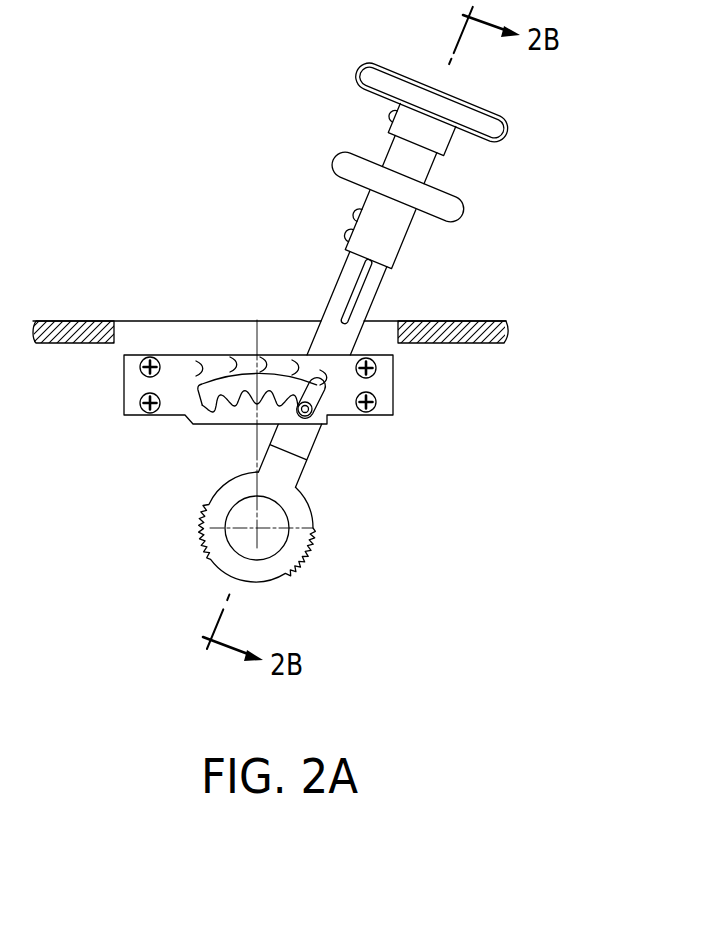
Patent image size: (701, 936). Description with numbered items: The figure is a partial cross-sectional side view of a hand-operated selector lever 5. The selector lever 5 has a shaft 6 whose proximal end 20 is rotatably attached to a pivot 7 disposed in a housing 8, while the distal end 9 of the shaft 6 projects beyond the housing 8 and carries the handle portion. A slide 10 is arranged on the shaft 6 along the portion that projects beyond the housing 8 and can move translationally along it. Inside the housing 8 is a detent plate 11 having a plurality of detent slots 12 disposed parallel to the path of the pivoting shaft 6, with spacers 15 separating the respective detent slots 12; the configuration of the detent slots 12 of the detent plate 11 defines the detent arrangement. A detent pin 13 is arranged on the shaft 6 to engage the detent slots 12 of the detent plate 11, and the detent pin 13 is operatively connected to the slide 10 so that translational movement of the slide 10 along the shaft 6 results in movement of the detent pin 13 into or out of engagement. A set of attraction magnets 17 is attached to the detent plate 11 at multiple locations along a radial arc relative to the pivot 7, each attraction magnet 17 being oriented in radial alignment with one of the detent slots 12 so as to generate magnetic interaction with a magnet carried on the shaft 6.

The selector lever 5 is at (212, 153).
The shaft 6 is at (368, 318).
The pivot 7 is at (251, 535).
The housing 8 is at (78, 330).
The distal end 9 is at (465, 88).
The slide 10 is at (410, 238).
The detent plate 11 is at (124, 383).
The detent slots 12 is at (204, 405).
The detent pin 13 is at (313, 412).
The spacers 15 is at (220, 399).
The attraction magnets 17 is at (260, 358).
The proximal end 20 is at (313, 528).